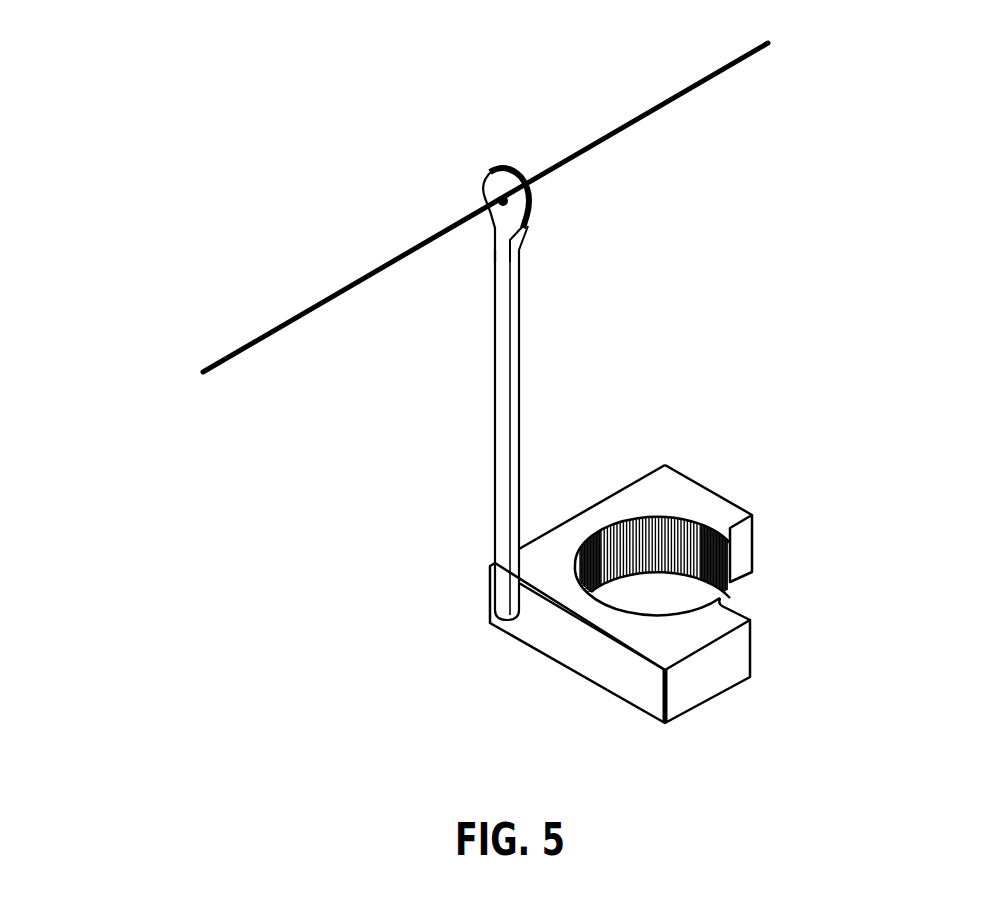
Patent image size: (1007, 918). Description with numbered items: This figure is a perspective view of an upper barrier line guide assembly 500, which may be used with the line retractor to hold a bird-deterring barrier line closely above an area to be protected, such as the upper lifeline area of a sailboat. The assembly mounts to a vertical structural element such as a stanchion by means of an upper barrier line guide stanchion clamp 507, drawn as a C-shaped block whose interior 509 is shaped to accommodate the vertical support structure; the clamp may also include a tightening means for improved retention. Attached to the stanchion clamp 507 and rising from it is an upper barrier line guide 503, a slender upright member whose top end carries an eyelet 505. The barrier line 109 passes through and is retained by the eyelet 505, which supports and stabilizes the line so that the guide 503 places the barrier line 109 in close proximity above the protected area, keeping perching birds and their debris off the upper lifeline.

The barrier line 109 is at (653, 113).
The upper barrier line guide assembly 500 is at (390, 430).
The upper barrier line guide 503 is at (503, 403).
The eyelet 505 is at (485, 177).
The upper barrier line guide stanchion clamp 507 is at (575, 645).
The interior 509 is at (665, 593).